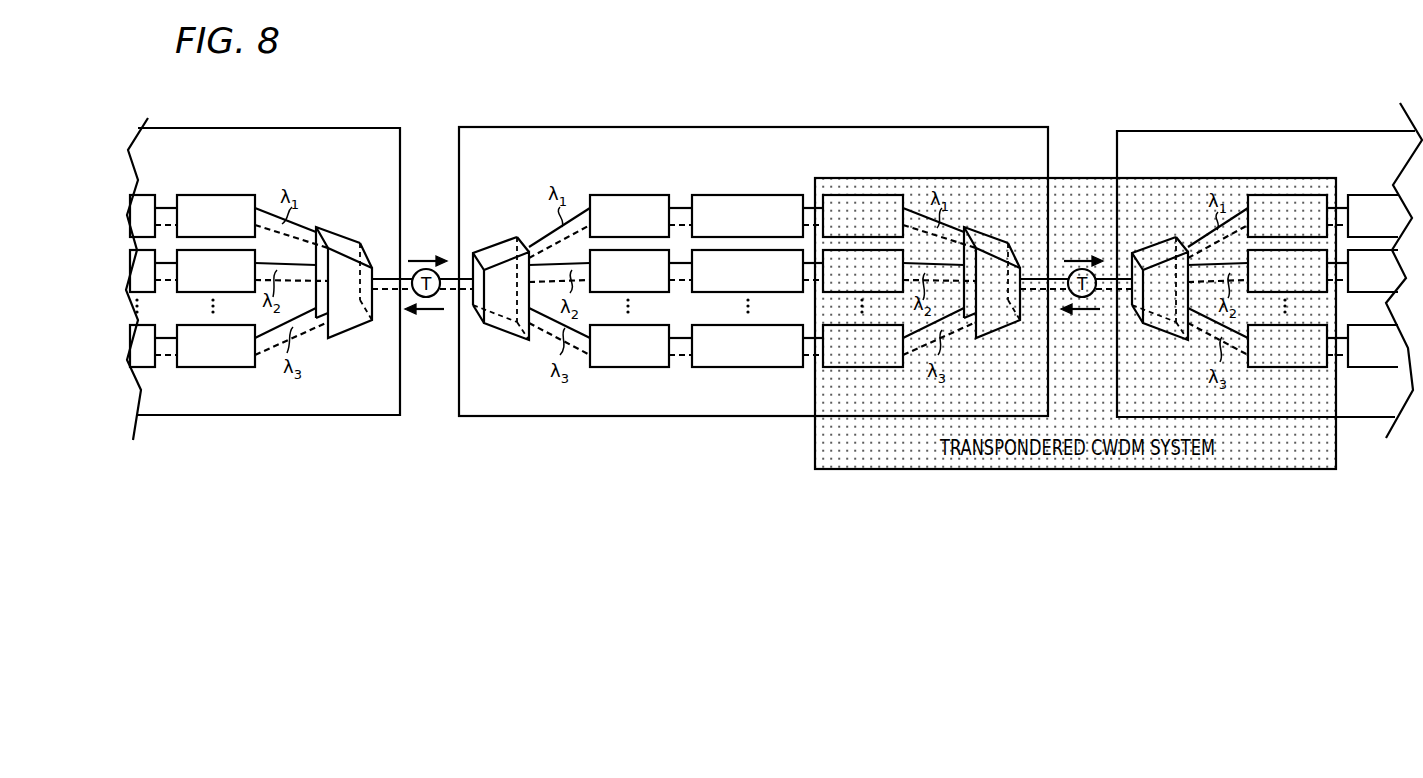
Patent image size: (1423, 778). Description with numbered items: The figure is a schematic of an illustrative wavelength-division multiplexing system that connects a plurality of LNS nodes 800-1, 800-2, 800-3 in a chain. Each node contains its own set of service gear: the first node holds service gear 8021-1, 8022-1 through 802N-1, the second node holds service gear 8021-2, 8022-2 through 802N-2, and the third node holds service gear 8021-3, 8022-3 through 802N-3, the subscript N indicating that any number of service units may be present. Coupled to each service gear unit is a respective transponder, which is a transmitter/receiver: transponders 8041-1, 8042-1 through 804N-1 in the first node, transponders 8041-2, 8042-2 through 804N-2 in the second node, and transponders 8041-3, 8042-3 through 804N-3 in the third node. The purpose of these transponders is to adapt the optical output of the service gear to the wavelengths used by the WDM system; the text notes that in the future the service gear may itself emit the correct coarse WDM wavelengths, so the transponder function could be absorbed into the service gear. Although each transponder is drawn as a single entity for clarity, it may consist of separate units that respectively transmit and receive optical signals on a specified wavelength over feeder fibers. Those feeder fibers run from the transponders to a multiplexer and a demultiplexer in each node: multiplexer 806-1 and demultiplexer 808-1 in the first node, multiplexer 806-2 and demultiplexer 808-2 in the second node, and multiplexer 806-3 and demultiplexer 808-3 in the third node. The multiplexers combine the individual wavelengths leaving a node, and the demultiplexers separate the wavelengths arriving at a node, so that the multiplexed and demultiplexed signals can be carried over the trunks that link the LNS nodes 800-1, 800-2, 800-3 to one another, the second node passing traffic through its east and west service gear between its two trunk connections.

The LNS node 800-1 is at (321, 128).
The LNS node 800-2 is at (688, 127).
The LNS node 800-3 is at (1228, 130).
The service gear 8021-1 is at (137, 197).
The service gear 8022-1 is at (143, 247).
The service gear 802N-1 is at (152, 365).
The transponder 8041-1 is at (252, 221).
The transponder 8042-1 is at (252, 271).
The transponder 804N-1 is at (252, 337).
The multiplexer 806-1 is at (343, 335).
The demultiplexer 808-1 is at (338, 238).
The demultiplexer 808-2 is at (505, 238).
The multiplexer 806-2 is at (498, 333).
The transponder 8041-2 is at (752, 226).
The transponder 8042-2 is at (752, 271).
The transponder 804N-2 is at (752, 337).
The service gear 8021-2 is at (726, 210).
The service gear 8022-2 is at (735, 263).
The service gear 802N-2 is at (726, 368).
The multiplexer 806-3 is at (1160, 240).
The demultiplexer 808-3 is at (1160, 330).
The transponder 8041-3 is at (1268, 226).
The transponder 8042-3 is at (1268, 271).
The transponder 804N-3 is at (1268, 337).
The service gear 8021-3 is at (1382, 207).
The service gear 8022-3 is at (1358, 253).
The service gear 802N-3 is at (1382, 358).